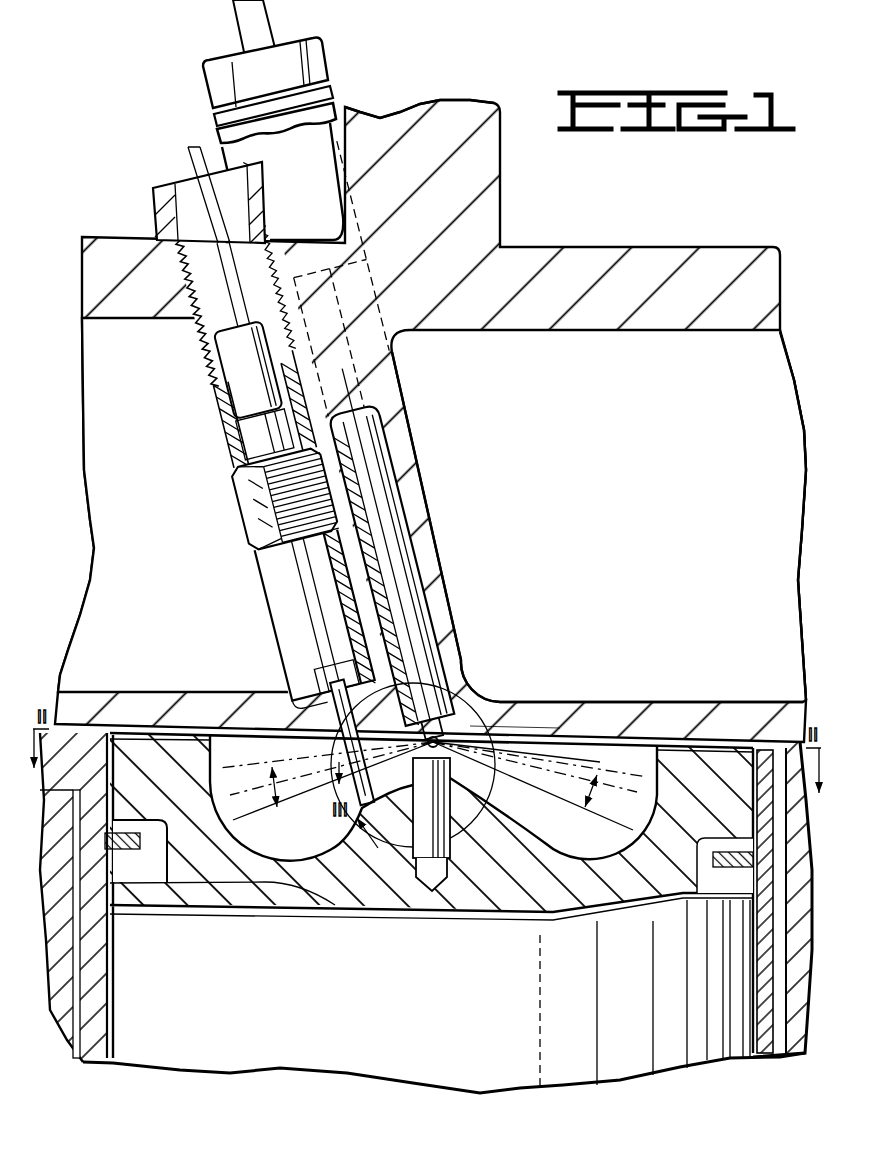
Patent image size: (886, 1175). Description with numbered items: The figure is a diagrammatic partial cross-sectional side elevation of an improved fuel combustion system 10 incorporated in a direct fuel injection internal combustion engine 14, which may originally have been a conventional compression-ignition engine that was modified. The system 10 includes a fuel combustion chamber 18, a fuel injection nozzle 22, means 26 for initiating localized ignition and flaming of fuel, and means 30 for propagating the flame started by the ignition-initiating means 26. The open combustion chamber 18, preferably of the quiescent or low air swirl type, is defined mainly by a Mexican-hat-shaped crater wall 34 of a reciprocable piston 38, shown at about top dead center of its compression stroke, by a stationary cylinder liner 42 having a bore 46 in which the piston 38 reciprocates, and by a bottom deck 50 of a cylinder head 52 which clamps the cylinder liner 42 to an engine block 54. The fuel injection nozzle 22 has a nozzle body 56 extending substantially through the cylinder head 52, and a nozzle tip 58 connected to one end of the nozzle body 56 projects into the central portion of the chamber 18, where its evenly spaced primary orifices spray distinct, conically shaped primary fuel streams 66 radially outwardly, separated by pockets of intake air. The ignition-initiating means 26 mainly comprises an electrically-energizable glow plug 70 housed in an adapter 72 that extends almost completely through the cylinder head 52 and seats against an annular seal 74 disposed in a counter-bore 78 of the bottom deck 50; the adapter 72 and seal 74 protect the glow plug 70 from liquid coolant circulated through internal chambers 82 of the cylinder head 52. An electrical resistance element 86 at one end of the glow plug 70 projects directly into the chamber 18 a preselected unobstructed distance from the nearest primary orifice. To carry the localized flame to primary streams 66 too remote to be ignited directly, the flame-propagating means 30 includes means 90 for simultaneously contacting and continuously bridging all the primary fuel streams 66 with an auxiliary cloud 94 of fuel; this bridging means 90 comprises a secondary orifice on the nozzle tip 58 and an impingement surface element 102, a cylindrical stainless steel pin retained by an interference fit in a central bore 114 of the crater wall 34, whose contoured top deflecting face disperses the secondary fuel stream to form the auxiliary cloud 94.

The fuel combustion system 10 is at (604, 468).
The direct fuel injection internal combustion engine 14 is at (566, 176).
The fuel combustion chamber 18 is at (565, 846).
The fuel injection nozzle 22 is at (399, 497).
The means for initiating localized ignition and flaming of fuel 26 is at (256, 540).
The means for propagating the flame 30 is at (531, 731).
The crater wall 34 is at (306, 841).
The piston 38 is at (624, 1088).
The cylinder liner 42 is at (777, 870).
The bore 46 is at (753, 993).
The bottom deck 50 is at (710, 700).
The cylinder head 52 is at (658, 245).
The engine block 54 is at (797, 933).
The nozzle body 56 is at (395, 531).
The nozzle tip 58 is at (471, 700).
The primary fuel streams 66 is at (223, 793).
The glow plug 70 is at (307, 594).
The adapter 72 is at (287, 610).
The annular seal 74 is at (318, 665).
The counter-bore 78 is at (312, 690).
The internal chambers 82 is at (137, 397).
The electrical resistance element 86 is at (364, 779).
The means for simultaneously and interconnectedly contacting and continuously bridgi 90 is at (458, 732).
The auxiliary cloud of fuel 94 is at (589, 765).
The impingement surface element 102 is at (467, 778).
The central bore 114 is at (449, 849).